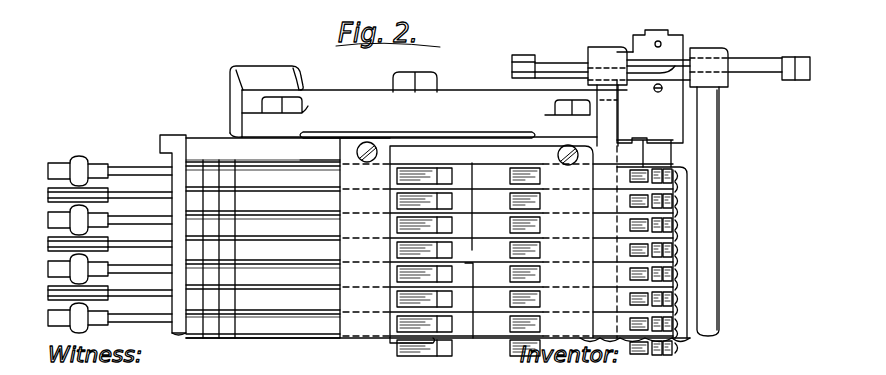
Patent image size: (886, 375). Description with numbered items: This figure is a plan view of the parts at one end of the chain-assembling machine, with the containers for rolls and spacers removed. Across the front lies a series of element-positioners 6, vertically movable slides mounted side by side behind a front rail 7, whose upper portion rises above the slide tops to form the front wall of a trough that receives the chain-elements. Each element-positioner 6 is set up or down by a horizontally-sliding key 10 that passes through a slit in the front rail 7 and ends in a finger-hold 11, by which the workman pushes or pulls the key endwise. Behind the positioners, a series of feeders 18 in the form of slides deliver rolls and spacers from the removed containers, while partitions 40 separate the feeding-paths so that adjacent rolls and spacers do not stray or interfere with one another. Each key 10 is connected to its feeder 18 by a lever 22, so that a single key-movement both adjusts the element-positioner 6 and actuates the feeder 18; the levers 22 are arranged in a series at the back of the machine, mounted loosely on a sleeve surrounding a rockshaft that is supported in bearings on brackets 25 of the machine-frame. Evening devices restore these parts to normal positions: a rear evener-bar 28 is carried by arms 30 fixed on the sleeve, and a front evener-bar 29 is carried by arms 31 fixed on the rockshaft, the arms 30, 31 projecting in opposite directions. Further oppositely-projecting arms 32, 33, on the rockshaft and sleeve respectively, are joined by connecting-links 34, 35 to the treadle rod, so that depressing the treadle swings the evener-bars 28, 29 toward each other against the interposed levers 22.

The element-positioner 6 is at (227, 175).
The front rail 7 is at (170, 331).
The key 10 is at (135, 165).
The finger-hold 11 is at (79, 158).
The feeder 18 is at (300, 170).
The lever 22 is at (678, 181).
The bracket 25 is at (673, 128).
The evener-bar 28 is at (720, 199).
The evener-bar 29 is at (602, 127).
The arm 30 is at (687, 70).
The arm 31 is at (637, 57).
The arm 32 is at (750, 53).
The arm 33 is at (552, 82).
The connecting-link 34 is at (750, 78).
The connecting-link 35 is at (558, 60).
The partition 40 is at (313, 184).